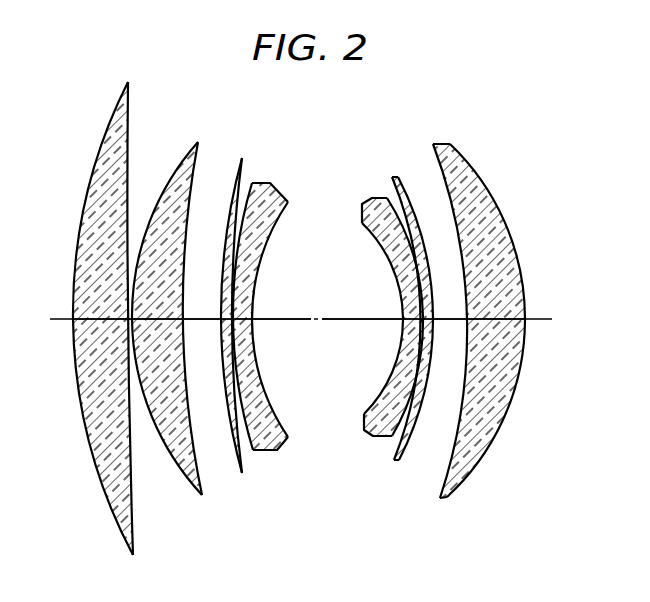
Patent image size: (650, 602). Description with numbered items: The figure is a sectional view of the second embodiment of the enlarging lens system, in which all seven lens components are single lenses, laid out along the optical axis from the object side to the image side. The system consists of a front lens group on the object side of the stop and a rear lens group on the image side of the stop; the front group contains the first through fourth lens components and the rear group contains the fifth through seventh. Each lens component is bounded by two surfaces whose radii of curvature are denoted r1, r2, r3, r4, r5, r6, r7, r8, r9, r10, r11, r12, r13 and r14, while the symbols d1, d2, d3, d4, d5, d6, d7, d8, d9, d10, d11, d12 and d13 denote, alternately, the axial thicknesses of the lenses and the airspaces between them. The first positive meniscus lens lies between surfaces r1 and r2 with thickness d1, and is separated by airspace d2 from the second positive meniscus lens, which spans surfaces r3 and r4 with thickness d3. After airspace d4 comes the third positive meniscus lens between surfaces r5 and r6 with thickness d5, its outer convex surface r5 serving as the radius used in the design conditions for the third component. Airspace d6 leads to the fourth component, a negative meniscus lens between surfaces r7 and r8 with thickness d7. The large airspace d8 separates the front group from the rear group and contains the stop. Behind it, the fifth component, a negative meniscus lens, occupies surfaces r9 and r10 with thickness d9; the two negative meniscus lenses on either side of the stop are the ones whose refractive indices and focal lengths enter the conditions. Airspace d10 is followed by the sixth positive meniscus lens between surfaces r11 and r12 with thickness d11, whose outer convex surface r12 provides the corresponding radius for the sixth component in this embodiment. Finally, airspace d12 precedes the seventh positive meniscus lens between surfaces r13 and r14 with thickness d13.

The radius of curvature of first lens surface r1 is at (110, 508).
The radius of curvature of second lens surface r2 is at (136, 524).
The radius of curvature of third lens surface r3 is at (177, 468).
The radius of curvature of fourth lens surface r4 is at (203, 493).
The radius of curvature of fifth lens surface r5 is at (223, 458).
The radius of curvature of sixth lens surface r6 is at (250, 474).
The radius of curvature of seventh lens surface r7 is at (248, 449).
The radius of curvature of eighth lens surface r8 is at (286, 398).
The radius of curvature of ninth lens surface r9 is at (366, 408).
The radius of curvature of tenth lens surface r10 is at (393, 443).
The radius of curvature of eleventh lens surface r11 is at (395, 452).
The radius of curvature of twelfth lens surface r12 is at (412, 454).
The radius of curvature of thirteenth lens surface r13 is at (434, 490).
The radius of curvature of fourteenth lens surface r14 is at (458, 484).
The thickness of first lens d1 is at (84, 318).
The airspace between first and second lenses d2 is at (113, 318).
The thickness of second lens d3 is at (143, 318).
The airspace between second and third lenses d4 is at (172, 318).
The thickness of third lens d5 is at (194, 318).
The airspace between third and fourth lenses d6 is at (220, 318).
The thickness of fourth lens d7 is at (248, 318).
The airspace between fourth and fifth lenses d8 is at (307, 318).
The thickness of fifth lens d9 is at (410, 318).
The airspace between fifth and sixth lenses d10 is at (428, 322).
The thickness of sixth lens d11 is at (435, 318).
The airspace between sixth and seventh lenses d12 is at (473, 322).
The thickness of seventh lens d13 is at (481, 318).